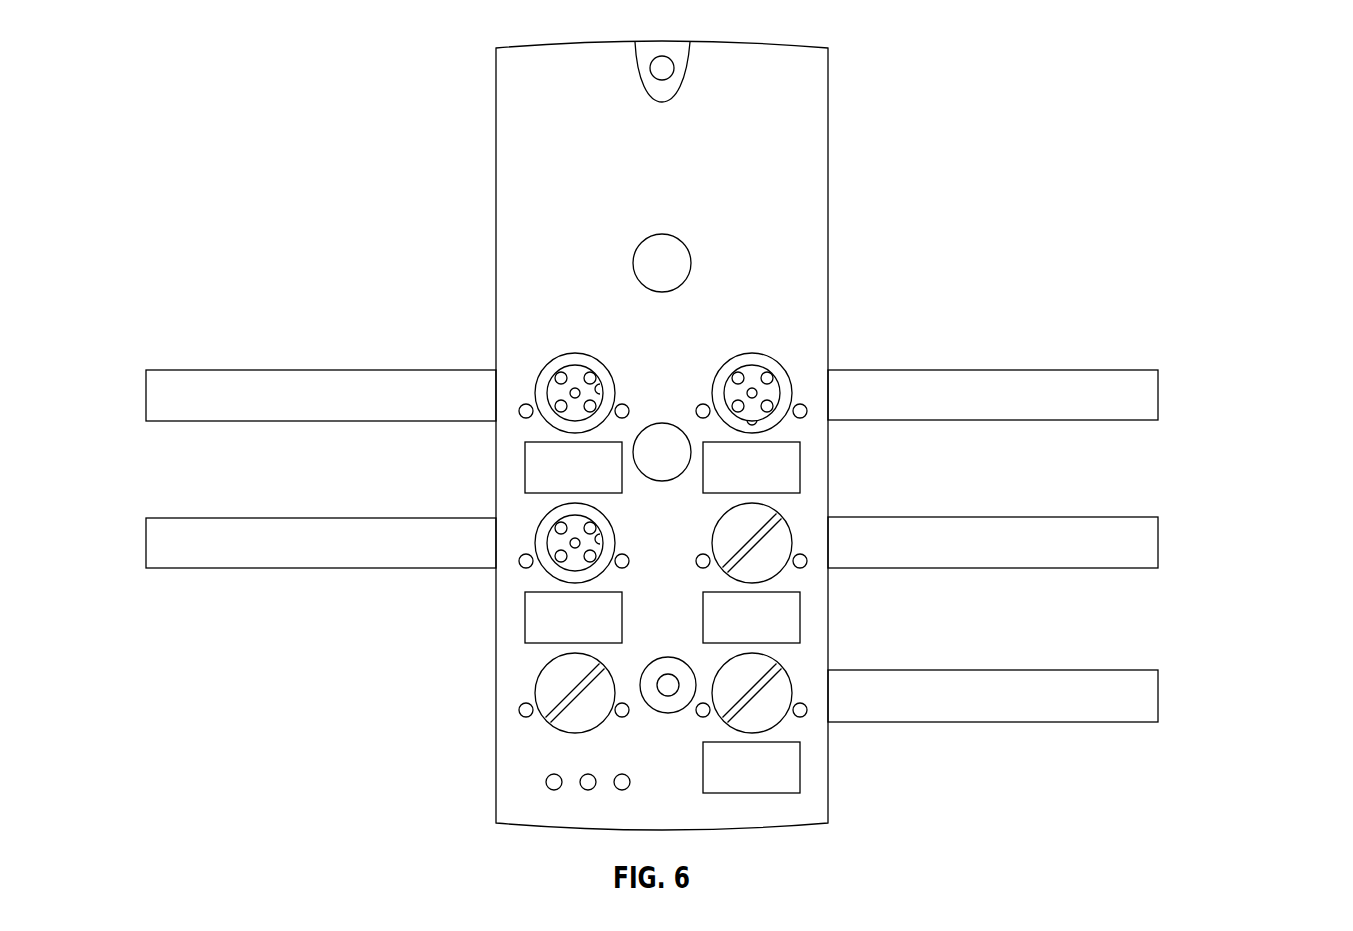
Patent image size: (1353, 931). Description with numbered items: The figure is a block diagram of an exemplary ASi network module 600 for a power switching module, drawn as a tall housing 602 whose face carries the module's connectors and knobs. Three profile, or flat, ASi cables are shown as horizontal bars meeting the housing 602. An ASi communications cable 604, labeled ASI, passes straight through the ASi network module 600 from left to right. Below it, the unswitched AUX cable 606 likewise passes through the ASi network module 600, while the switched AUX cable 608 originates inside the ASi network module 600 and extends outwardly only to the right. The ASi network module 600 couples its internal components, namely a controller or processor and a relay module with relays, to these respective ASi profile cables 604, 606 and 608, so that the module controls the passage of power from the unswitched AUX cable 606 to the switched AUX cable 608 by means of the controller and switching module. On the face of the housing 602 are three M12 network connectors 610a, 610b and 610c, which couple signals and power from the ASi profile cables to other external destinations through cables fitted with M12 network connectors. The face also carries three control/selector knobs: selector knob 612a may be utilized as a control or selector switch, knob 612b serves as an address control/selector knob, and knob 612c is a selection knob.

The ASi network module 600 is at (501, 419).
The housing 602 is at (582, 41).
The ASi communications cable 604 is at (177, 370).
The unswitched AUX cable 606 is at (190, 568).
The switched AUX cable 608 is at (1103, 670).
The M12 network connector 610a is at (538, 370).
The M12 network connector 610b is at (781, 367).
The M12 network connector 610c is at (538, 518).
The selector knob 612a is at (793, 512).
The address control/selector knob 612b is at (790, 672).
The selection knob 612c is at (540, 718).